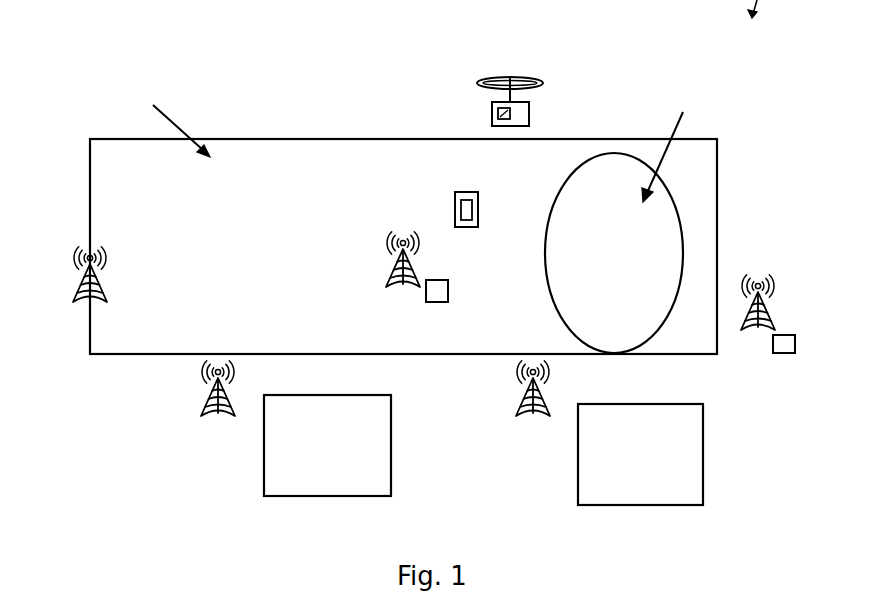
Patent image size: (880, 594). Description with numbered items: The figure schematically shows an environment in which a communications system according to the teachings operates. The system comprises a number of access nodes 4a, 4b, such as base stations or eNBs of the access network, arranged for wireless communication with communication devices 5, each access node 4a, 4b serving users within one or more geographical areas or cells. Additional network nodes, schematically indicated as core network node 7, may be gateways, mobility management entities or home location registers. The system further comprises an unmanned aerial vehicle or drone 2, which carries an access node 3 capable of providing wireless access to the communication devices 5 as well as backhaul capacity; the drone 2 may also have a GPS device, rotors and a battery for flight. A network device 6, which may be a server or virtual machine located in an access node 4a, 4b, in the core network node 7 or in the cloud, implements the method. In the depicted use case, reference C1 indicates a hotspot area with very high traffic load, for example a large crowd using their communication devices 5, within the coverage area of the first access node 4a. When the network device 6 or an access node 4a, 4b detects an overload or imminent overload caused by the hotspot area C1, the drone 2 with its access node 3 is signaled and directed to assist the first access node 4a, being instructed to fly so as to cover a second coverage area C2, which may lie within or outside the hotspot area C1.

The drone 2 is at (541, 82).
The access node 3 is at (492, 115).
The first access node 4a is at (448, 290).
The access node 4b is at (785, 353).
The communication device 5 is at (478, 210).
The network device 6 is at (703, 450).
The core network node 7 is at (391, 442).
The hotspot area C1 is at (315, 138).
The second coverage area C2 is at (657, 245).